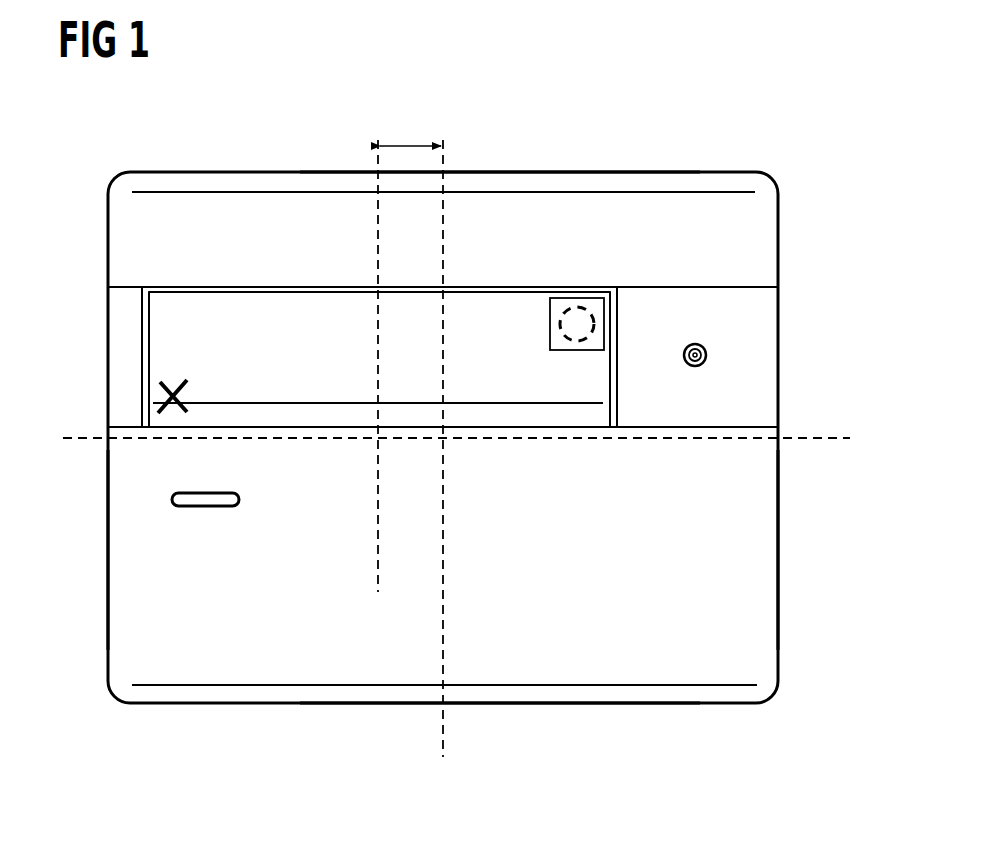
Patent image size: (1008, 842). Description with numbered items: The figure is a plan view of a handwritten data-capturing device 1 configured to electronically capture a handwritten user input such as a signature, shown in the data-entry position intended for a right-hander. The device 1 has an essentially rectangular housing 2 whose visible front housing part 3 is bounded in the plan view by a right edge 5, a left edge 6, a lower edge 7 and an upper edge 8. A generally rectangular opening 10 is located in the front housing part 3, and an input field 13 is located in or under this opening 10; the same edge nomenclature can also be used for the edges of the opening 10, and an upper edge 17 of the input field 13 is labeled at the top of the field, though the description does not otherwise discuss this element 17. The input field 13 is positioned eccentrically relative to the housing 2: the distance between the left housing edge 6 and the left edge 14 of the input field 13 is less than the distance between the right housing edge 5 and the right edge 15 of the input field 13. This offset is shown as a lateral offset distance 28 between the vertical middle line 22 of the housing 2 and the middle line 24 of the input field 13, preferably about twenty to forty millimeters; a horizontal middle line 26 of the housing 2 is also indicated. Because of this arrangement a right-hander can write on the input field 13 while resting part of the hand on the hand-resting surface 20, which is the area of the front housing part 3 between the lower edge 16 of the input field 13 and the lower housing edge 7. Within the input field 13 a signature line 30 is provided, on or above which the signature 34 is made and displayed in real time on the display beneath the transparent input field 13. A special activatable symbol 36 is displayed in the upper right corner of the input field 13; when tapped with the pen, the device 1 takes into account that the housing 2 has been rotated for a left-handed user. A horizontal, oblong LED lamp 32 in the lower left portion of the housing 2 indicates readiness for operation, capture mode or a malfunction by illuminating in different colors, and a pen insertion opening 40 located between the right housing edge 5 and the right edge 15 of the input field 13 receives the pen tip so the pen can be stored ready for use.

The handwritten data-capturing device 1 is at (548, 138).
The housing 2 is at (806, 262).
The front housing part 3 is at (763, 650).
The right edge of housing 5 is at (780, 537).
The left edge of housing 6 is at (108, 540).
The lower edge of housing 7 is at (643, 705).
The upper edge of housing 8 is at (643, 172).
The opening 10 is at (203, 288).
The input field 13 is at (345, 302).
The left edge of input field 14 is at (146, 372).
The right edge of input field 15 is at (611, 372).
The lower edge of input field 16 is at (493, 428).
The display window 17 is at (483, 290).
The surface for resting a hand while inputting handwritten data 20 is at (680, 602).
The vertical middle line of housing 22 is at (443, 740).
The middle line of input field 24 is at (378, 564).
The horizontal middle line of housing 26 is at (837, 439).
The lateral offset distance 28 is at (410, 145).
The signature line 30 is at (272, 404).
The LED lamp 32 is at (205, 500).
The handwritten input/signature 34 is at (270, 318).
The activatable symbol 36 is at (552, 322).
The pen insertion opening 40 is at (702, 364).